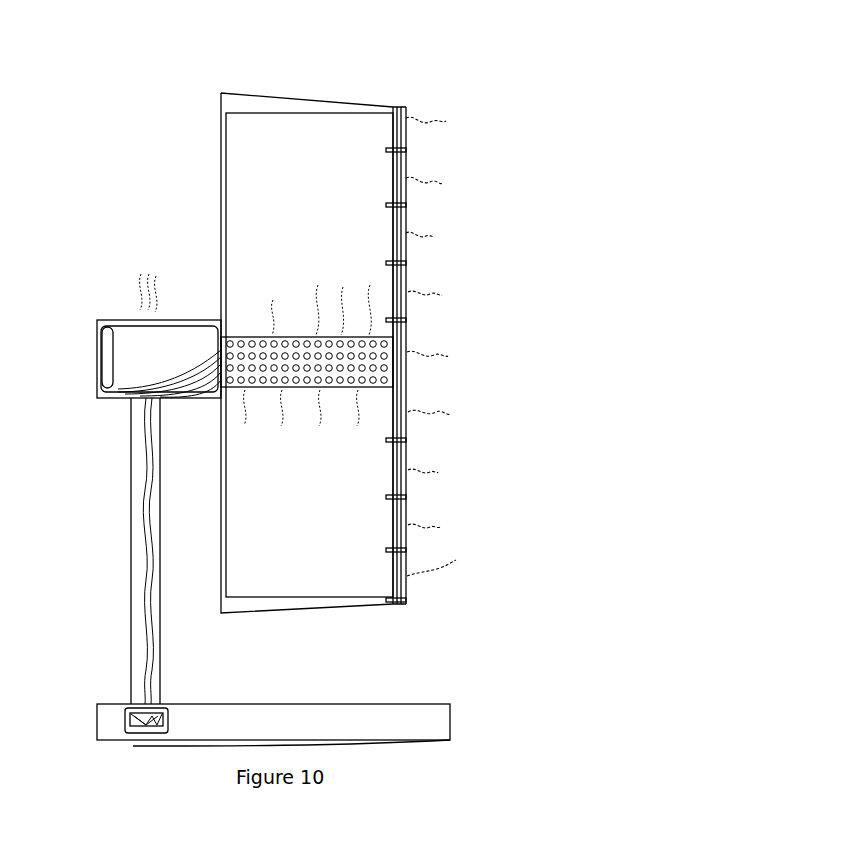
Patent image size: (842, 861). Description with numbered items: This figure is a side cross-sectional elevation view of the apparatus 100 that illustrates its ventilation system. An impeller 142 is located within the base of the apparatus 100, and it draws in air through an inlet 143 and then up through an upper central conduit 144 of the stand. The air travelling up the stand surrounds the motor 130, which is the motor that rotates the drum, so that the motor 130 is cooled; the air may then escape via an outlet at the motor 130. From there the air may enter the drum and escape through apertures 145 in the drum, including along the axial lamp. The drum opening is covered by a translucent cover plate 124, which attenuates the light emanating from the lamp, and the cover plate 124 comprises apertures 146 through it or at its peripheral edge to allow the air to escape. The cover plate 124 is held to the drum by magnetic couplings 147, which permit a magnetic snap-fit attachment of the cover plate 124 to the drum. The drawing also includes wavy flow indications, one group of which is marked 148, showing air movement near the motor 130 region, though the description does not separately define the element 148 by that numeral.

The apparatus 100 is at (412, 72).
The cover plate 124 is at (406, 335).
The motor 130 is at (113, 353).
The impeller 142 is at (123, 712).
The inlet 143 is at (124, 749).
The upper central conduit 144 is at (131, 535).
The apertures 145 is at (278, 334).
The apertures 146 is at (393, 462).
The magnetic couplings 147 is at (393, 548).
The exhaust vapor 148 is at (138, 278).